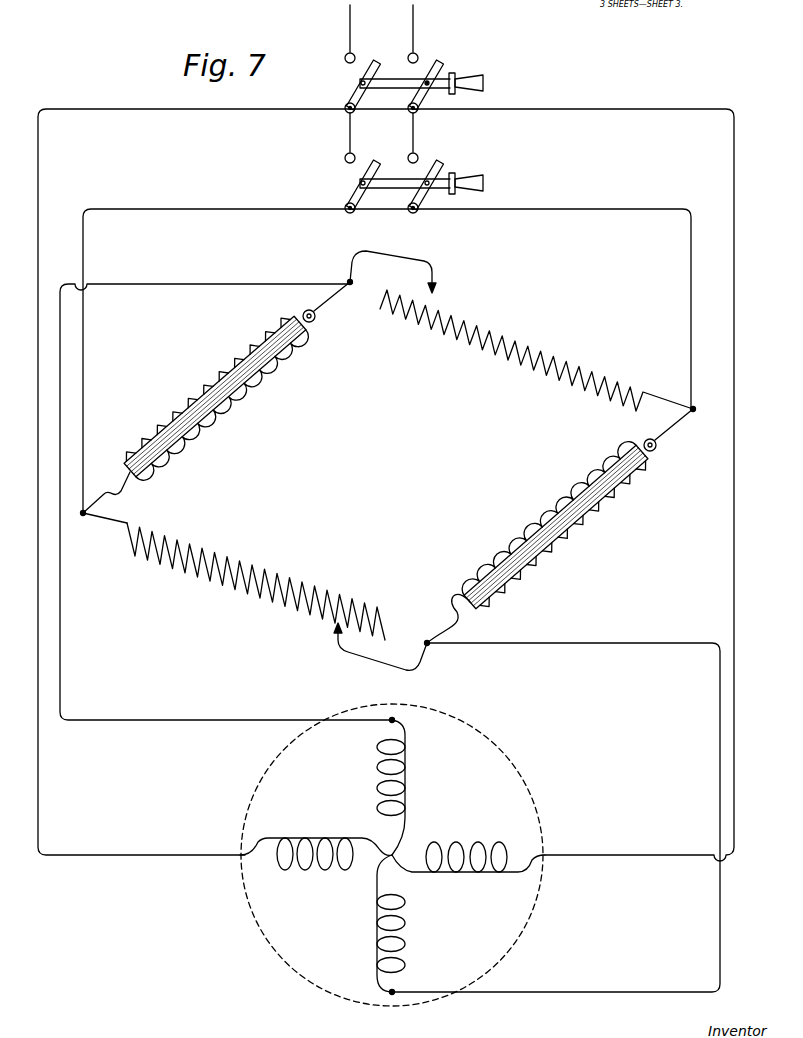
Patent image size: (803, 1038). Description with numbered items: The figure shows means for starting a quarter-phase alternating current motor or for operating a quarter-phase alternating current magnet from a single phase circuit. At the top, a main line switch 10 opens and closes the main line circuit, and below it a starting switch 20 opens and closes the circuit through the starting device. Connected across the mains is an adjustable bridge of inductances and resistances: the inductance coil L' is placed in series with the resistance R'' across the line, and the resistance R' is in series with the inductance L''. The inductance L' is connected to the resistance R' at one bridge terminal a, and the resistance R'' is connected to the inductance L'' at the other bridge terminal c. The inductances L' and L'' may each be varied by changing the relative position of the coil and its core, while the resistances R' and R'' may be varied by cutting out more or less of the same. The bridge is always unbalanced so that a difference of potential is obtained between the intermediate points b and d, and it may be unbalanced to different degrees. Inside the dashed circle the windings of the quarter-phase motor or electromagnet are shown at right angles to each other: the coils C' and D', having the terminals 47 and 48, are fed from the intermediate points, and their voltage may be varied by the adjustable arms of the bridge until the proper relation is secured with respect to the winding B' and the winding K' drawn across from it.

The main line switch 10 is at (437, 50).
The starting switch 20 is at (455, 160).
The terminal 47 is at (396, 720).
The terminal 48 is at (388, 998).
The bridge terminal a is at (103, 512).
The intermediate point b is at (348, 280).
The bridge terminal c is at (681, 419).
The intermediate point d is at (527, 804).
The inductance coil L' is at (237, 381).
The inductance coil L'' is at (541, 541).
The resistance R' is at (256, 581).
The resistance R'' is at (536, 350).
The winding B' is at (316, 840).
The coil C' is at (409, 787).
The coil K' is at (468, 840).
The coil D' is at (411, 923).